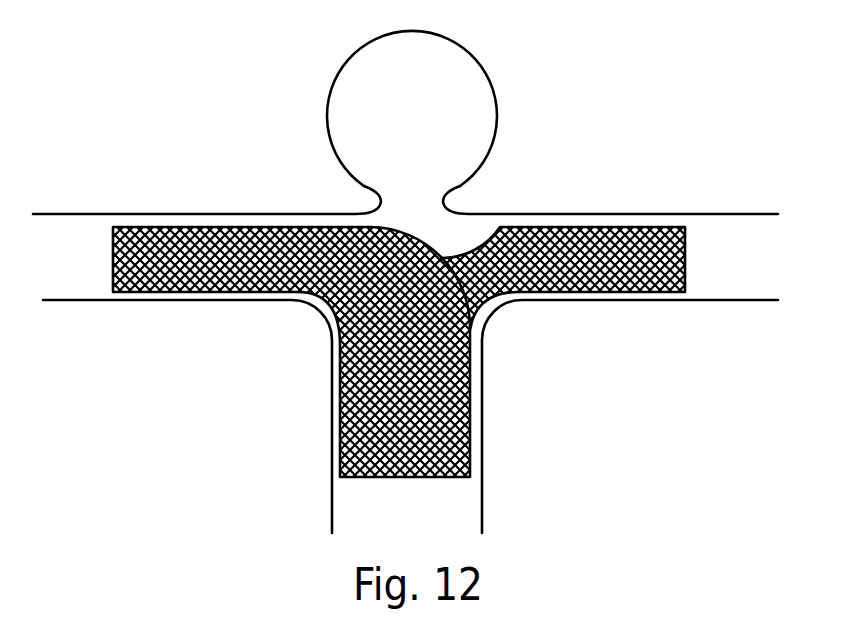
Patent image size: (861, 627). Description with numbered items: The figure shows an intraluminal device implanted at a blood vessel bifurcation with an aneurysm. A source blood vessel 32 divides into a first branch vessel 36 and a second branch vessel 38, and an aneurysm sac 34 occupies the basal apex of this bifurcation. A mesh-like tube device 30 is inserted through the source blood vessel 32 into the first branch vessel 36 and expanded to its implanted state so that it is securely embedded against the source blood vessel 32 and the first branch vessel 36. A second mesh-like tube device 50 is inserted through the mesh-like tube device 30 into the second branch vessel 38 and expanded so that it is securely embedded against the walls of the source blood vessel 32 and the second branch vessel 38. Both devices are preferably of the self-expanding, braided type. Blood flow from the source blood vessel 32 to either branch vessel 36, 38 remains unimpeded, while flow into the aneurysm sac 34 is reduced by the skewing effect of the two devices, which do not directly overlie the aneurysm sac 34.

The mesh-like tube device 30 is at (377, 398).
The source blood vessel 32 is at (477, 512).
The aneurysm sac 34 is at (462, 93).
The first branch vessel 36 is at (98, 230).
The second branch vessel 38 is at (722, 225).
The mesh-like tube device 50 is at (620, 228).